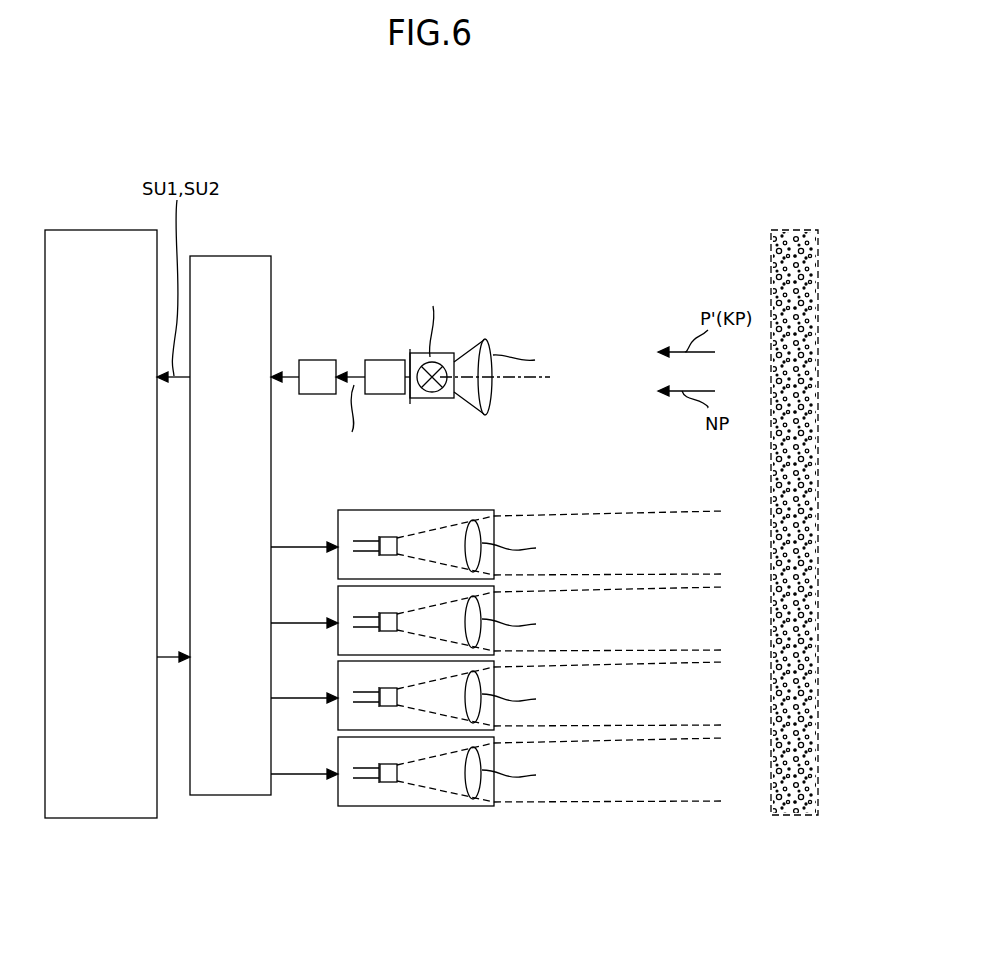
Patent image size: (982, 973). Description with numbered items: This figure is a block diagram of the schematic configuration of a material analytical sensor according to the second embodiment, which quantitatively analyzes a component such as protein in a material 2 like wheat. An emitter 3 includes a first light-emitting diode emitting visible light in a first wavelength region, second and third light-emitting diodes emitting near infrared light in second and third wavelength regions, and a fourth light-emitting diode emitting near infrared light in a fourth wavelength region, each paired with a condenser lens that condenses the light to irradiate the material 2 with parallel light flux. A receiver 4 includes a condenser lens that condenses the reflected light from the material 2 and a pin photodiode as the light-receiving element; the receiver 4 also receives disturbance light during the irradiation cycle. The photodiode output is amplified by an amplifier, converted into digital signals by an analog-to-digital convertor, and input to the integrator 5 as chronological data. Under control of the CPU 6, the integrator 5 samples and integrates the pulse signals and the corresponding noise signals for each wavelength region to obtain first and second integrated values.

The material 2 is at (792, 229).
The emitter 3 is at (471, 493).
The receiver 4 is at (384, 335).
The integrator 5 is at (259, 256).
The CPU 6 is at (98, 230).